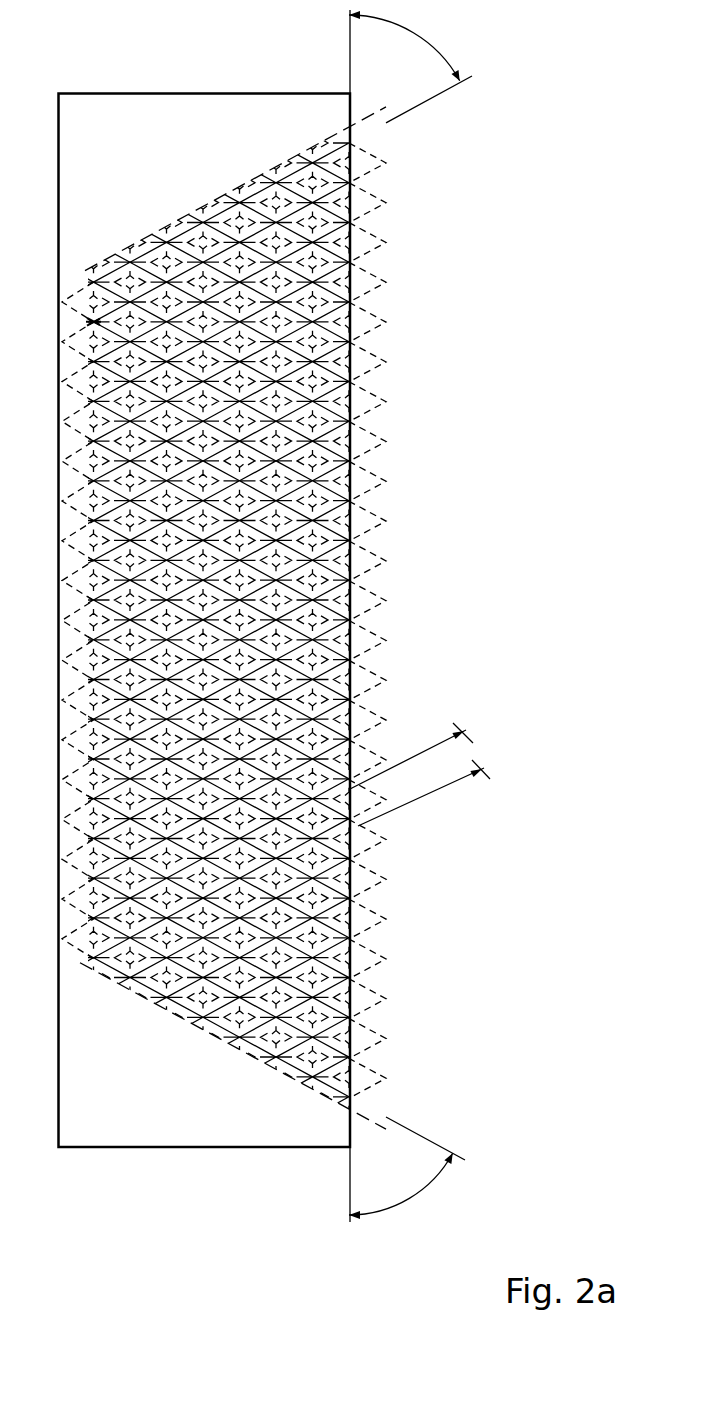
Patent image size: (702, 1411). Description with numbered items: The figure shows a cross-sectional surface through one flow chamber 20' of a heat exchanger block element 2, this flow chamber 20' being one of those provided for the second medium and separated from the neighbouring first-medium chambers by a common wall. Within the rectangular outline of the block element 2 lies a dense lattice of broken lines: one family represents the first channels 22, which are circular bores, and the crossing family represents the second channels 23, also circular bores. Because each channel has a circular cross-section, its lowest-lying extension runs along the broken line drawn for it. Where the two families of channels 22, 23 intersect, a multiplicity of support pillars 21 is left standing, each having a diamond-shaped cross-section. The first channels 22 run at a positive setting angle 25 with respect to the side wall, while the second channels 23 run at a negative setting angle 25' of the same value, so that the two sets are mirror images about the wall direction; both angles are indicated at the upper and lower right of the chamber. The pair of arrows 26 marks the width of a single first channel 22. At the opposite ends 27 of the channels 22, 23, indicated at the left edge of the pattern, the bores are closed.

The block element 2 is at (218, 93).
The flow chamber 20' is at (231, 567).
The support pillar 21 is at (312, 1062).
The first channel 22 is at (380, 133).
The second channel 23 is at (373, 432).
The positive setting angle 25 is at (410, 66).
The negative setting angle 25' is at (407, 1169).
The arrows 26 is at (468, 722).
The opposite ends 27 is at (90, 322).